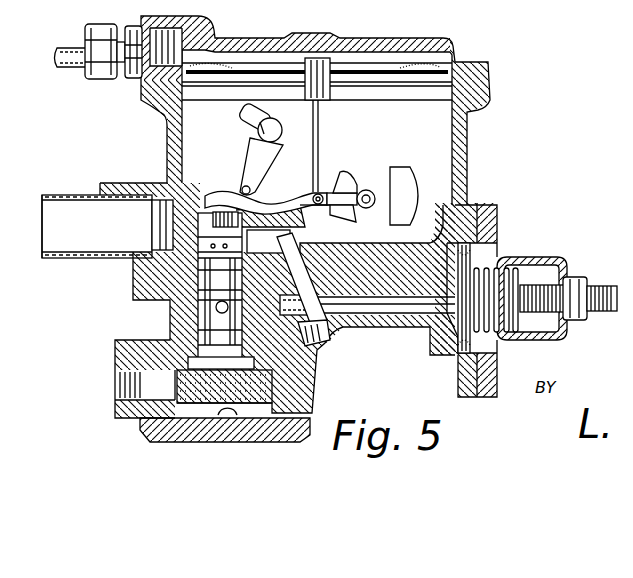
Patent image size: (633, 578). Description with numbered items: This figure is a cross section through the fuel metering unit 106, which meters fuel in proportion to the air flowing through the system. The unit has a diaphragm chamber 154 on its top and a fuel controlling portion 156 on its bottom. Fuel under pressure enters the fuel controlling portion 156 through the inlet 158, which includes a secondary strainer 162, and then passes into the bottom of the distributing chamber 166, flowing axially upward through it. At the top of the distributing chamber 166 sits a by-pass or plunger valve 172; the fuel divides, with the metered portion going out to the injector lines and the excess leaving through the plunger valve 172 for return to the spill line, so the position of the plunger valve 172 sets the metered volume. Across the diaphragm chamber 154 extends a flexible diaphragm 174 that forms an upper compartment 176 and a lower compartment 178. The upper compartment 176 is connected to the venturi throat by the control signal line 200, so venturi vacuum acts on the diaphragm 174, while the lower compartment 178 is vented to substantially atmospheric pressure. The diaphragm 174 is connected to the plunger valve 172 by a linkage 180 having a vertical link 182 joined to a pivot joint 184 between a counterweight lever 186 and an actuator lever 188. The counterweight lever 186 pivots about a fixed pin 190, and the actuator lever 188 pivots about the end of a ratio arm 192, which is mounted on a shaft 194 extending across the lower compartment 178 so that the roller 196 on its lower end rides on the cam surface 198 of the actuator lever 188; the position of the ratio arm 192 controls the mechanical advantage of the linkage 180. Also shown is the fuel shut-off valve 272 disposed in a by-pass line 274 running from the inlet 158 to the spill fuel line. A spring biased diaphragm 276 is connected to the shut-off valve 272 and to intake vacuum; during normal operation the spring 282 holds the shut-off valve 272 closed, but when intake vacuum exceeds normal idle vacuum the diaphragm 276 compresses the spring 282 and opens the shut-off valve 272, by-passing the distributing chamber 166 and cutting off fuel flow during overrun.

The fuel metering unit 106 is at (166, 144).
The diaphragm chamber 154 is at (452, 120).
The fuel controlling portion 156 is at (133, 283).
The inlet 158 is at (137, 418).
The secondary strainer 162 is at (201, 415).
The distributing chamber 166 is at (285, 310).
The by-pass or plunger valve 172 is at (215, 198).
The flexible diaphragm 174 is at (376, 72).
The upper compartment 176 is at (263, 66).
The lower compartment 178 is at (457, 191).
The linkage 180 is at (335, 183).
The vertical link 182 is at (331, 108).
The pivot joint 184 is at (337, 192).
The counterweight lever 186 is at (409, 190).
The actuator lever 188 is at (248, 188).
The fixed pin 190 is at (372, 191).
The ratio arm 192 is at (319, 131).
The shaft 194 is at (270, 150).
The roller 196 is at (256, 193).
The cam surface 198 is at (323, 222).
The control signal line 200 is at (82, 68).
The fuel shut-off valve 272 is at (343, 327).
The by-pass line 274 is at (315, 275).
The spring biased diaphragm 276 is at (458, 338).
The spring 282 is at (505, 262).